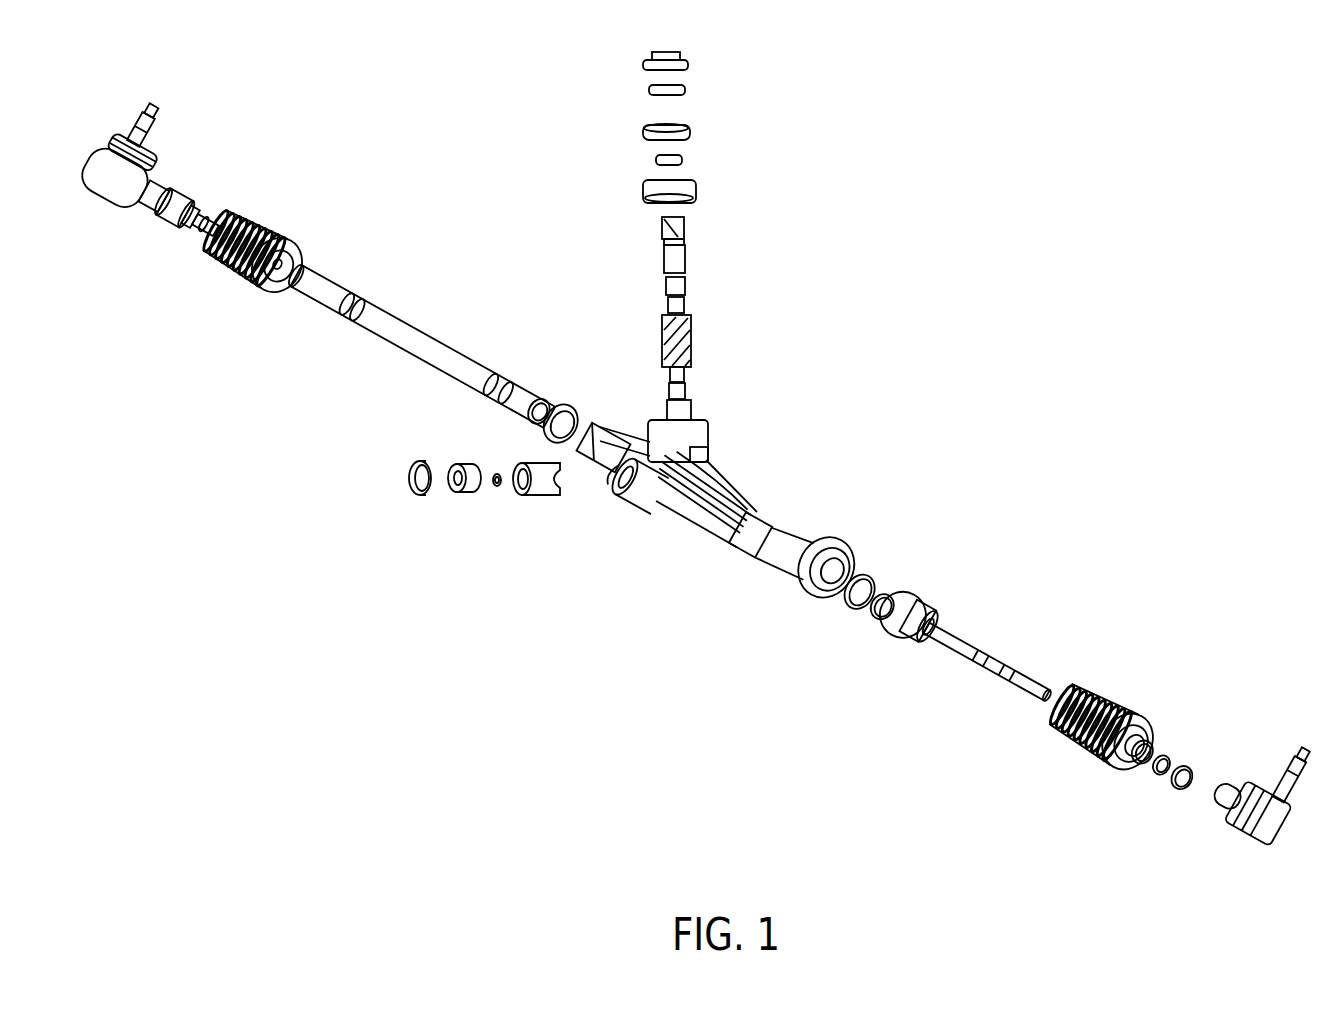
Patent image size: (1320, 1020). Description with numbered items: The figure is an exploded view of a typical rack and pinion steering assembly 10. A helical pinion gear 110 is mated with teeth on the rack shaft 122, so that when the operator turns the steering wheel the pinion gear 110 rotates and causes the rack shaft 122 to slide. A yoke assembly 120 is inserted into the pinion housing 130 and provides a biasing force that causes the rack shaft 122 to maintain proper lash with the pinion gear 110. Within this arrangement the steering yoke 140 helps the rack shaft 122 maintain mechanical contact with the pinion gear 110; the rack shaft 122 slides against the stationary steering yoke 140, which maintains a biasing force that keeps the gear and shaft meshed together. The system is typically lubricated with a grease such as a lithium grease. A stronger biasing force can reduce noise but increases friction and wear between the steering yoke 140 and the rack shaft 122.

The steering assembly 10 is at (697, 452).
The helical pinion gear 110 is at (698, 334).
The yoke assembly 120 is at (492, 547).
The rack shaft 122 is at (392, 311).
The pinion housing 130 is at (700, 473).
The steering yoke 140 is at (538, 500).